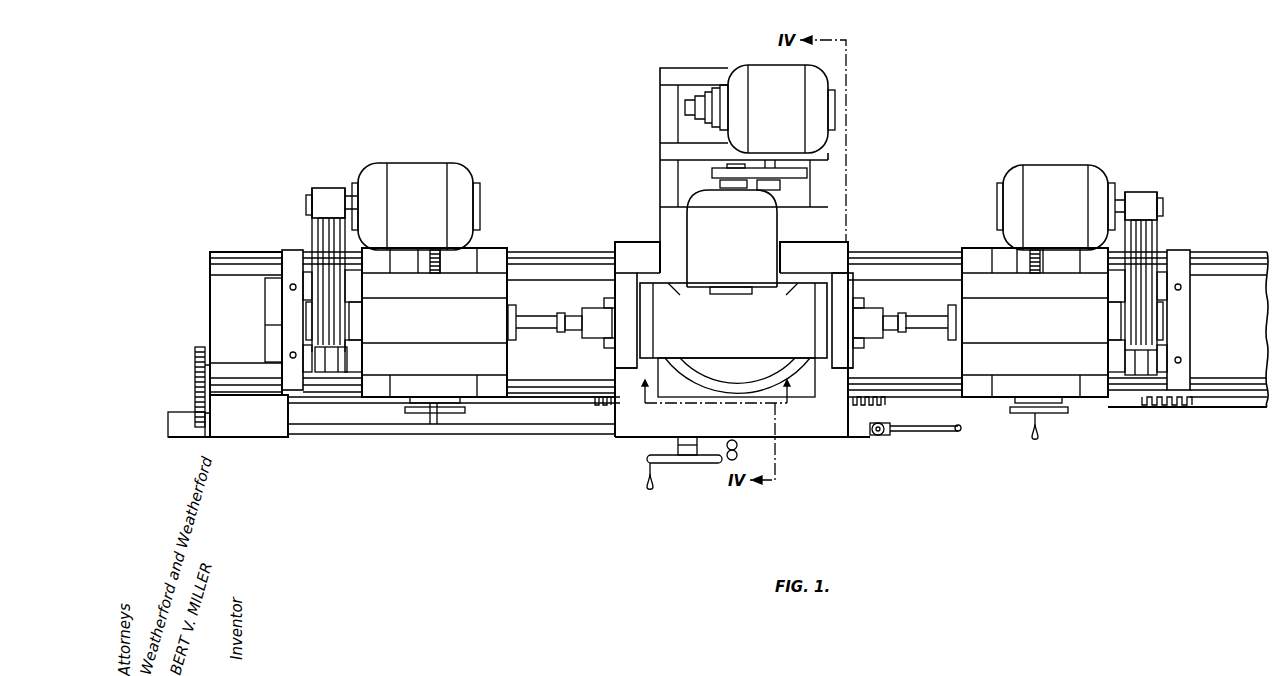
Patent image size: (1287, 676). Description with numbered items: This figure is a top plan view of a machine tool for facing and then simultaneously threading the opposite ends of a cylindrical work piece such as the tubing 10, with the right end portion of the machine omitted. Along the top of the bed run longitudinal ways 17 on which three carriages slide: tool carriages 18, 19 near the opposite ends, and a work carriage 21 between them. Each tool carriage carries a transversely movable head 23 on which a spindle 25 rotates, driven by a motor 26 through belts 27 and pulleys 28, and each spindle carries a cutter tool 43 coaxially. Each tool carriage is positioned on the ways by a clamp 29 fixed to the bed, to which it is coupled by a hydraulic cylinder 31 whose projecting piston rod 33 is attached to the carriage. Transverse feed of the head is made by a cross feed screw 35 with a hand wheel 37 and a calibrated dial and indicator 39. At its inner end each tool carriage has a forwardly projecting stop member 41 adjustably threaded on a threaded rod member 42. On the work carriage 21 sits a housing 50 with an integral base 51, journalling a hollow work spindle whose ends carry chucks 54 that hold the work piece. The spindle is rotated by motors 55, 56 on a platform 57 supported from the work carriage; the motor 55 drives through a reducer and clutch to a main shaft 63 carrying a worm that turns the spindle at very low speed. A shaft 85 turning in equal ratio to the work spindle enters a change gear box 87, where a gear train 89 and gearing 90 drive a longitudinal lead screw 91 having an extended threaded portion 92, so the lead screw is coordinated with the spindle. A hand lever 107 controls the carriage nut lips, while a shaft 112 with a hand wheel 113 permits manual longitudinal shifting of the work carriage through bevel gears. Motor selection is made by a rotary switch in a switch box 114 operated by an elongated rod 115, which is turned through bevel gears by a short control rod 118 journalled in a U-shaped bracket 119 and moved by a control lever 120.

The tubing 10 is at (594, 314).
The ways 17 is at (576, 393).
The tool carriage 18 is at (986, 248).
The tool carriage 19 is at (495, 252).
The work carriage 21 is at (642, 246).
The head 23 is at (508, 303).
The spindle 25 is at (362, 319).
The motor 26 is at (408, 176).
The belts 27 is at (319, 232).
The pulleys 28 is at (311, 193).
The clamp 29 is at (288, 342).
The cylinder 31 is at (333, 360).
The piston rod 33 is at (362, 285).
The cross feed screw 35 is at (434, 273).
The hand wheel 37 is at (1042, 420).
The dial and indicator 39 is at (429, 400).
The stop member 41 is at (567, 330).
The threaded rod member 42 is at (536, 336).
The cutter tool 43 is at (889, 316).
The housing 50 is at (782, 294).
The base 51 is at (684, 398).
The chuck 54 is at (618, 286).
The motor 55 is at (780, 66).
The motor 56 is at (769, 236).
The platform 57 is at (685, 72).
The main shaft 63 is at (768, 192).
The shaft 85 is at (270, 316).
The change gear box 87 is at (210, 308).
The gear train 89 is at (195, 392).
The gearing 90 is at (262, 428).
The lead screw 91 is at (316, 403).
The extended threaded portion 92 is at (1204, 407).
The hand lever 107 is at (736, 455).
The shaft 112 is at (678, 446).
The hand wheel 113 is at (668, 464).
The switch box 114 is at (202, 435).
The rod 115 is at (468, 426).
The control rod 118 is at (879, 426).
The U-shaped bracket 119 is at (854, 436).
The control lever 120 is at (925, 432).